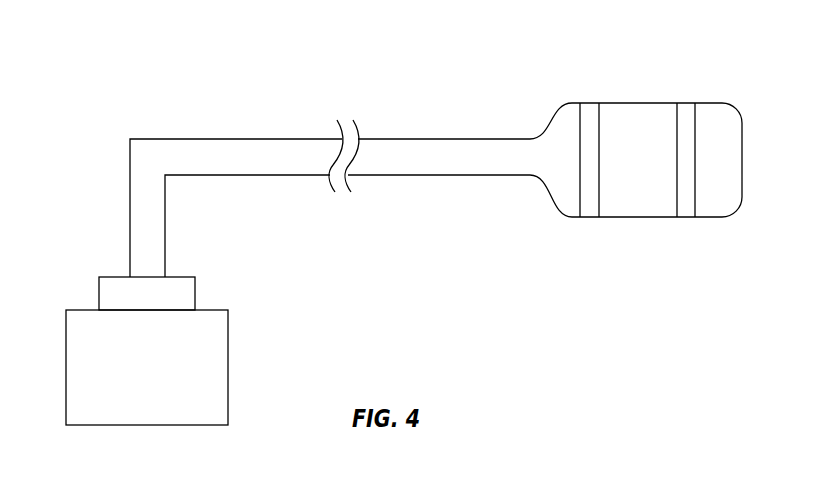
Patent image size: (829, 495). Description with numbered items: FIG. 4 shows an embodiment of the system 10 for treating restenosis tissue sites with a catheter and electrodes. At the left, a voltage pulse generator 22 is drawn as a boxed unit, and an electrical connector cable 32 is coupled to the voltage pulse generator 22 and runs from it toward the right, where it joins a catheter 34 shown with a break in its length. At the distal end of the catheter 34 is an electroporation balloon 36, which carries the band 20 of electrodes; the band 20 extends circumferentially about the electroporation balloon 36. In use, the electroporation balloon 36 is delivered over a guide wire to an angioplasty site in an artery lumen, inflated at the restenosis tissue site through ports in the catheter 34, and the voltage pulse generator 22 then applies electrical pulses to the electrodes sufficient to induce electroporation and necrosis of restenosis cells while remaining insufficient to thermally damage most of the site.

The system 10 is at (98, 38).
The band of electrodes 20 is at (693, 103).
The voltage pulse generator 22 is at (80, 310).
The electrical connector cable 32 is at (160, 138).
The catheter 34 is at (456, 139).
The electroporation balloon 36 is at (646, 115).